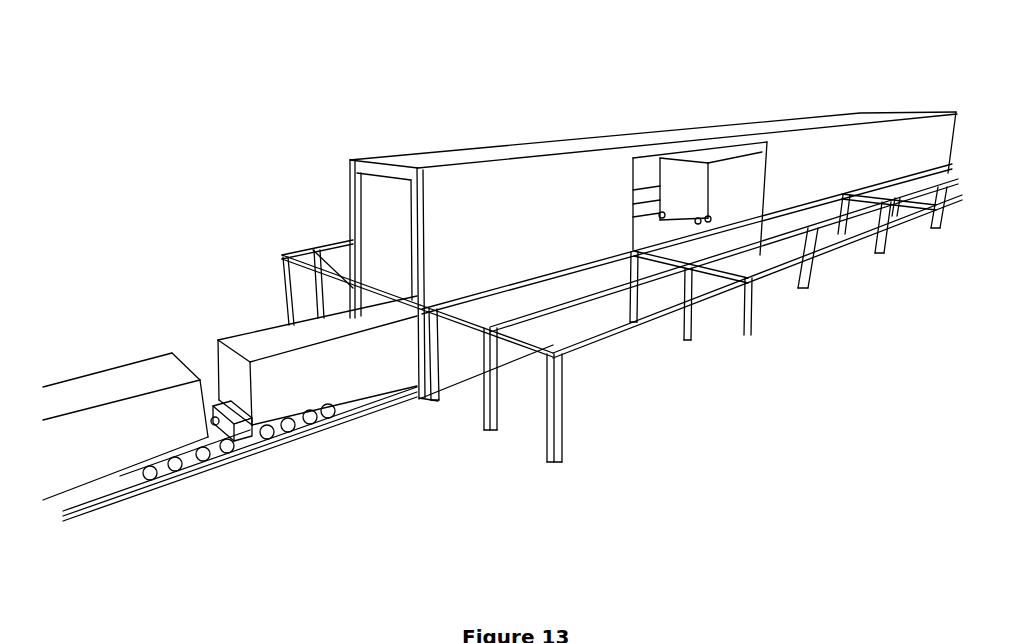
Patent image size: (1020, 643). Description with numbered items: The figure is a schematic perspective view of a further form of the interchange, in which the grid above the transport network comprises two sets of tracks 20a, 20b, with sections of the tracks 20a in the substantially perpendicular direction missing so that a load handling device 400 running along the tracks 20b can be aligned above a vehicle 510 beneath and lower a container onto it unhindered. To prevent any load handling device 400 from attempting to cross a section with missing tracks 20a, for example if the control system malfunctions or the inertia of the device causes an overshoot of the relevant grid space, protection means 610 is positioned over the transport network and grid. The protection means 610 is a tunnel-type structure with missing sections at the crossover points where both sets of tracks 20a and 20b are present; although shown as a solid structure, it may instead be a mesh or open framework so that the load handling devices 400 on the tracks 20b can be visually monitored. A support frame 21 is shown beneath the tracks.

The tracks 20a is at (410, 297).
The tracks 20b is at (432, 307).
The support frame 21 is at (490, 403).
The load handling device 400 is at (722, 182).
The vehicle 510 is at (247, 432).
The protection means 610 is at (522, 190).